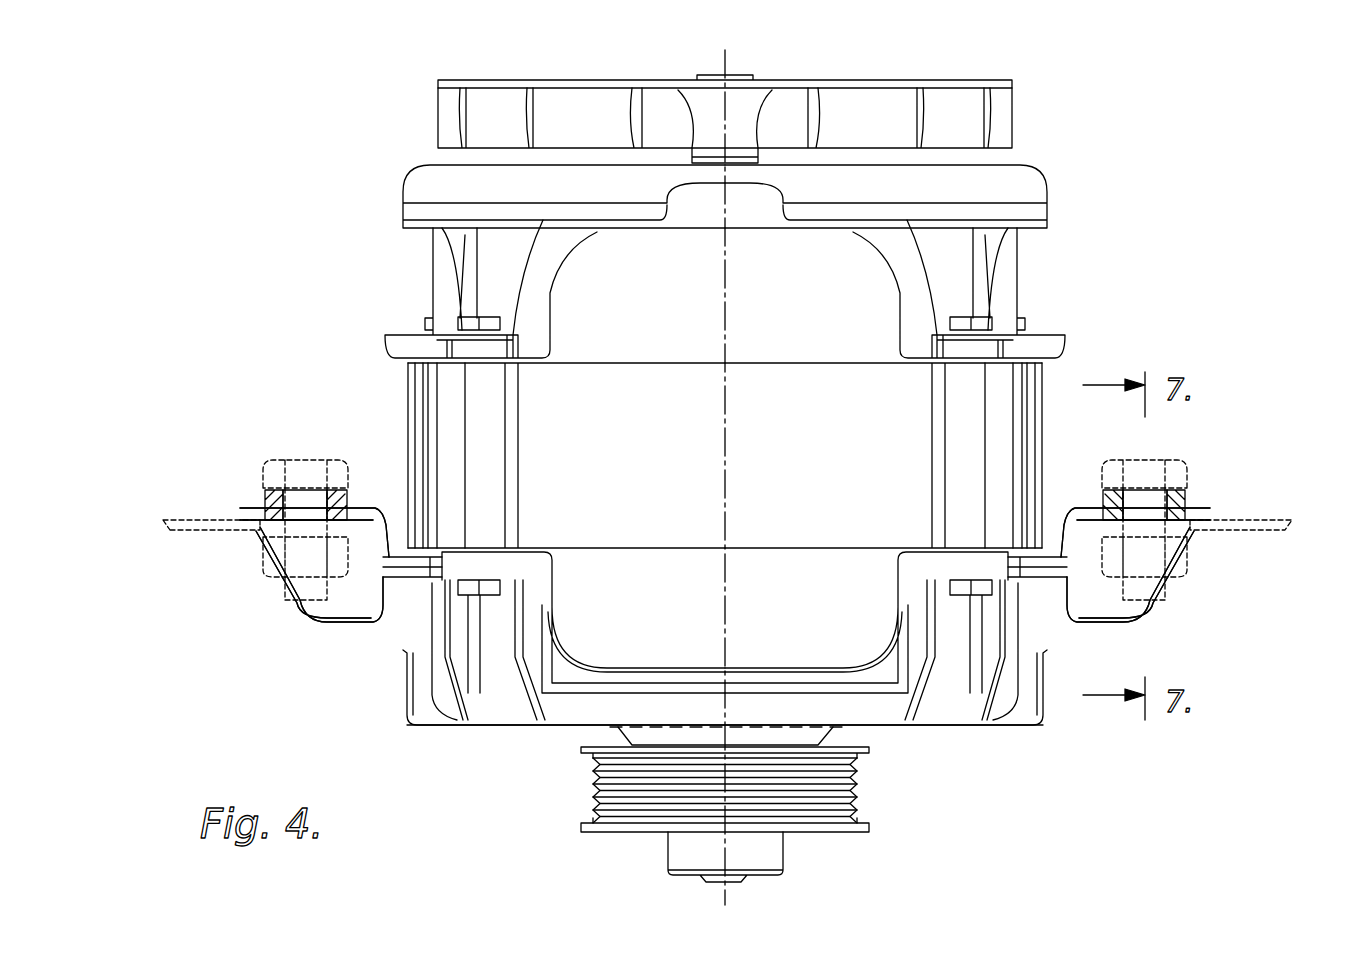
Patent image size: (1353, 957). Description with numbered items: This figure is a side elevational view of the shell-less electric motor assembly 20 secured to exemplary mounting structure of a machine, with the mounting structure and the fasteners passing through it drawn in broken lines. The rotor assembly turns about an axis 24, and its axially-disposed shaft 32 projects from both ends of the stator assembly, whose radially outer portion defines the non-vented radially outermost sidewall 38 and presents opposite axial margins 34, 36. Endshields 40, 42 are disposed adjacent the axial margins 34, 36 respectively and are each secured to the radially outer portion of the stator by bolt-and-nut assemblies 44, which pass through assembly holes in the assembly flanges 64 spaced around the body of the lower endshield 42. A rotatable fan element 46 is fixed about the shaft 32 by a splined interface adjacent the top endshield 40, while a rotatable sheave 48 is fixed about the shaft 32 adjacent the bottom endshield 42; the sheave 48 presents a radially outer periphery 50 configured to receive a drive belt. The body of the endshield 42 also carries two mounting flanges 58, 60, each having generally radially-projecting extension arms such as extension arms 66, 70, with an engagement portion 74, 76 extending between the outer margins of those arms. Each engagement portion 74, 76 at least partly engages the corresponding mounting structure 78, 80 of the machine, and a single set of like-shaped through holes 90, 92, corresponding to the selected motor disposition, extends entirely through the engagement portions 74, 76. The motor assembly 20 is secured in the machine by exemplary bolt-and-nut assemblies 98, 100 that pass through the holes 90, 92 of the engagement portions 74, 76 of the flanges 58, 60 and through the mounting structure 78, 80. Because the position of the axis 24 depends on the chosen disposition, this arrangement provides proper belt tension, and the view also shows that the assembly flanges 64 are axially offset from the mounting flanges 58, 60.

The motor assembly 20 is at (345, 155).
The axis 24 is at (730, 300).
The shaft 32 is at (707, 880).
The axial margin 34 is at (433, 372).
The axial margin 36 is at (455, 532).
The radially outermost sidewall 38 is at (970, 385).
The endshield 40 is at (950, 235).
The endshield 42 is at (952, 683).
The bolt-and-nut assemblies 44 is at (985, 318).
The fan element 46 is at (925, 118).
The sheave 48 is at (763, 817).
The radially outer periphery 50 is at (830, 788).
The mounting flange 58 is at (292, 622).
The mounting flange 60 is at (1213, 600).
The assembly flanges 64 is at (490, 567).
The extension arm 66 is at (358, 608).
The extension arm 70 is at (1108, 600).
The engagement portion 74 is at (265, 510).
The engagement portion 76 is at (1195, 510).
The mounting structure 78 is at (180, 528).
The mounting structure 80 is at (1265, 530).
The through hole 90 is at (312, 500).
The through hole 92 is at (1135, 510).
The bolt-and-nut assembly 98 is at (282, 450).
The bolt-and-nut assembly 100 is at (1170, 452).